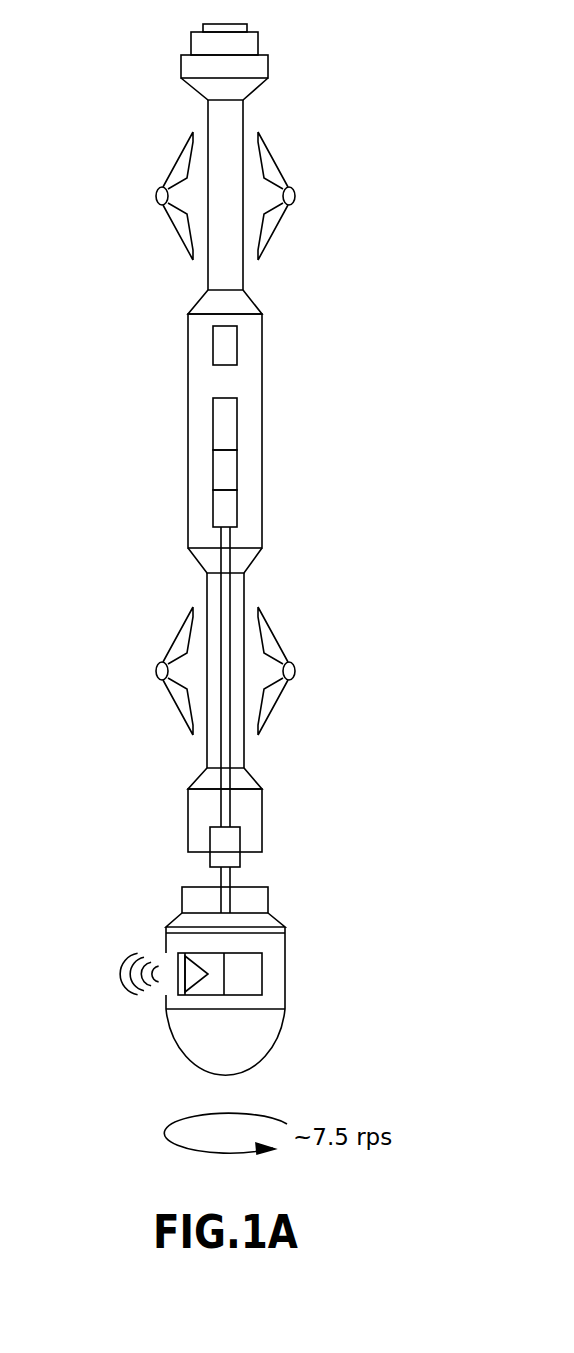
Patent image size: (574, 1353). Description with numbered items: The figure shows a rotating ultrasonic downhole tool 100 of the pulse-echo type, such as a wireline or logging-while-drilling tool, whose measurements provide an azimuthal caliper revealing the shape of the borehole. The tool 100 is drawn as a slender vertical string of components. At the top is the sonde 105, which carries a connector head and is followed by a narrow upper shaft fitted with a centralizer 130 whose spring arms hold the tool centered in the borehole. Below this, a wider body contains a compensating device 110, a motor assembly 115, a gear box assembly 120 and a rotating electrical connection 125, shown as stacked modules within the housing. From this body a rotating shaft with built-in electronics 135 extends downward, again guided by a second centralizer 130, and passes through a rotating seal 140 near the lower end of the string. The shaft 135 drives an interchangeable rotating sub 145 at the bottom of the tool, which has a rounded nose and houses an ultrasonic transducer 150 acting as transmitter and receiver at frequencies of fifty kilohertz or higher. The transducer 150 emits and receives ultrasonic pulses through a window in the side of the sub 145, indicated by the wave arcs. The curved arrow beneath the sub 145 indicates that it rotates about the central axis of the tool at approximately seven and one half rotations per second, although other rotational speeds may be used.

The tool 100 is at (137, 71).
The sonde 105 is at (257, 65).
The compensating device 110 is at (237, 345).
The motor assembly 115 is at (237, 422).
The gear box assembly 120 is at (237, 470).
The rotating electrical connection 125 is at (237, 512).
The centralizer 130 is at (296, 670).
The rotating shaft with built-in electronics 135 is at (237, 757).
The rotating seal 140 is at (240, 862).
The rotating sub 145 is at (285, 1017).
The ultrasonic transducer 150 is at (215, 968).